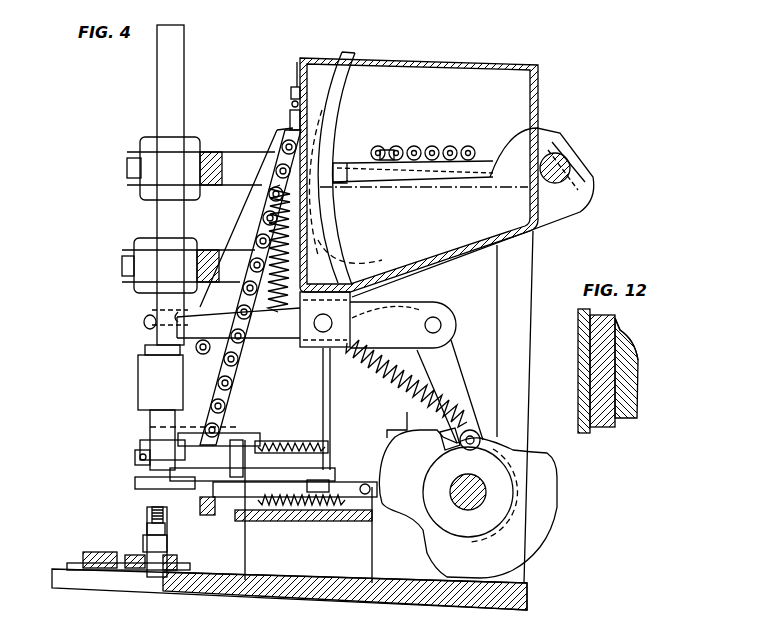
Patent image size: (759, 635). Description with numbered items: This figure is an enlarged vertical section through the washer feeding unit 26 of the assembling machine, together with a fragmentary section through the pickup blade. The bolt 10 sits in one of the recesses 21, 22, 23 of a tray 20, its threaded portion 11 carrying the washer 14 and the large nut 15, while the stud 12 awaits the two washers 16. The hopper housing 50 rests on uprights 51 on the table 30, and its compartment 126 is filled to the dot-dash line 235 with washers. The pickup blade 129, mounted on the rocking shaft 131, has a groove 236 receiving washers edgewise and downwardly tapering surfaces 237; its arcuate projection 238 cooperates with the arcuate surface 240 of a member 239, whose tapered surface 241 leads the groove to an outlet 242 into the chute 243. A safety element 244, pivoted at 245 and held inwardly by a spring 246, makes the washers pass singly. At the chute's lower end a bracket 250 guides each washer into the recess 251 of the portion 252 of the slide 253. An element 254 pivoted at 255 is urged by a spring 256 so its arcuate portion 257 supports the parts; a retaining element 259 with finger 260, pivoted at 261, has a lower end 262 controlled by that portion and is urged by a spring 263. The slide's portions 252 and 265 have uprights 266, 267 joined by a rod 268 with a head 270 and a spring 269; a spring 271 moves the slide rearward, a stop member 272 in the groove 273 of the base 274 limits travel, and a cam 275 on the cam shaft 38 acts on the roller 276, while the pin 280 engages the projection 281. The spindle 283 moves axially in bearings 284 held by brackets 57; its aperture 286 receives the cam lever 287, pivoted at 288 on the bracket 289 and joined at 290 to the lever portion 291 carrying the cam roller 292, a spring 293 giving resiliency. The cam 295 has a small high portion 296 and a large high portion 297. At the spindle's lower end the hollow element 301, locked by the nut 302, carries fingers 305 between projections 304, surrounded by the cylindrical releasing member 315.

In FIG. 4, the bolt 10 is at (153, 573).
In FIG. 4, the threaded portion 11 is at (121, 464).
In FIG. 4, the stud 12 is at (360, 140).
In FIG. 4, the washer 14 is at (145, 552).
In FIG. 4, the large nut 15 is at (167, 540).
In FIG. 4, the washers 16 is at (398, 147).
In FIG. 12, the washers 16 is at (619, 332).
In FIG. 4, the trays 20 is at (85, 563).
In FIG. 4, the recesses 21 is at (163, 570).
In FIG. 4, the recesses 22 is at (125, 570).
In FIG. 4, the recesses 23 is at (100, 573).
In FIG. 4, the unit 26 is at (141, 81).
In FIG. 4, the table 30 is at (357, 593).
In FIG. 4, the cam shaft 38 is at (472, 510).
In FIG. 4, the hopper housing 50 is at (540, 87).
In FIG. 12, the hopper housing 50 is at (582, 436).
In FIG. 4, the uprights 51 is at (327, 392).
In FIG. 4, the brackets 57 is at (210, 155).
In FIG. 4, the hopper compartment 126 is at (440, 75).
In FIG. 4, the pickup blade 129 is at (545, 130).
In FIG. 12, the pickup blade 129 is at (632, 418).
In FIG. 4, the rocking shaft 131 is at (560, 183).
In FIG. 4, the dot-dash line 235 is at (476, 211).
In FIG. 4, the groove 236 is at (424, 147).
In FIG. 12, the groove 236 is at (623, 352).
In FIG. 4, the downwardly tapering surfaces 237 is at (398, 172).
In FIG. 12, the downwardly tapering surfaces 237 is at (640, 370).
In FIG. 4, the projection 238 is at (347, 60).
In FIG. 4, the member 239 is at (322, 256).
In FIG. 4, the arcuate surface 240 is at (366, 251).
In FIG. 4, the tapered surface 241 is at (340, 152).
In FIG. 4, the outlet 242 is at (330, 128).
In FIG. 4, the chute 243 is at (277, 148).
In FIG. 4, the safety element 244 is at (290, 115).
In FIG. 4, the pivot 245 is at (292, 100).
In FIG. 4, the spring 246 is at (297, 70).
In FIG. 4, the bracket 250 is at (200, 475).
In FIG. 4, the recess 251 is at (138, 484).
In FIG. 4, the portion 252 is at (250, 500).
In FIG. 4, the slide 253 is at (286, 458).
In FIG. 4, the element 254 is at (255, 388).
In FIG. 4, the pivot 255 is at (252, 373).
In FIG. 4, the spring 256 is at (238, 399).
In FIG. 4, the arcuate portion 257 is at (150, 427).
In FIG. 4, the retaining element 259 is at (200, 370).
In FIG. 4, the retaining finger 260 is at (200, 387).
In FIG. 4, the pivot 261 is at (203, 332).
In FIG. 4, the lower end 262 is at (150, 420).
In FIG. 4, the spring 263 is at (246, 360).
In FIG. 4, the portion 265 is at (343, 482).
In FIG. 4, the upright 266 is at (278, 523).
In FIG. 4, the upright 267 is at (325, 440).
In FIG. 4, the rod 268 is at (334, 447).
In FIG. 4, the spring 269 is at (285, 440).
In FIG. 4, the head 270 is at (340, 445).
In FIG. 4, the spring 271 is at (302, 517).
In FIG. 4, the stop member 272 is at (212, 504).
In FIG. 4, the block 273 is at (231, 510).
In FIG. 4, the base 274 is at (270, 572).
In FIG. 4, the cam 275 is at (413, 508).
In FIG. 4, the roller 276 is at (380, 497).
In FIG. 4, the pin 280 is at (248, 412).
In FIG. 4, the projection 281 is at (248, 427).
In FIG. 4, the spindle 283 is at (170, 108).
In FIG. 4, the bearings 284 is at (140, 142).
In FIG. 4, the aperture 286 is at (153, 318).
In FIG. 4, the cam lever 287 is at (180, 312).
In FIG. 4, the pivot 288 is at (332, 325).
In FIG. 4, the bracket 289 is at (333, 350).
In FIG. 4, the pivotal connection 290 is at (436, 321).
In FIG. 4, the lever portion 291 is at (461, 363).
In FIG. 4, the cam roller 292 is at (481, 435).
In FIG. 4, the spring 293 is at (415, 378).
In FIG. 4, the cam 295 is at (493, 507).
In FIG. 4, the small high portion 296 is at (446, 452).
In FIG. 4, the large high portion 297 is at (530, 540).
In FIG. 4, the hollow element 301 is at (152, 426).
In FIG. 4, the nut 302 is at (148, 350).
In FIG. 4, the integral projections 304 is at (138, 455).
In FIG. 4, the fingers 305 is at (140, 447).
In FIG. 4, the cylindrical releasing member 315 is at (140, 368).